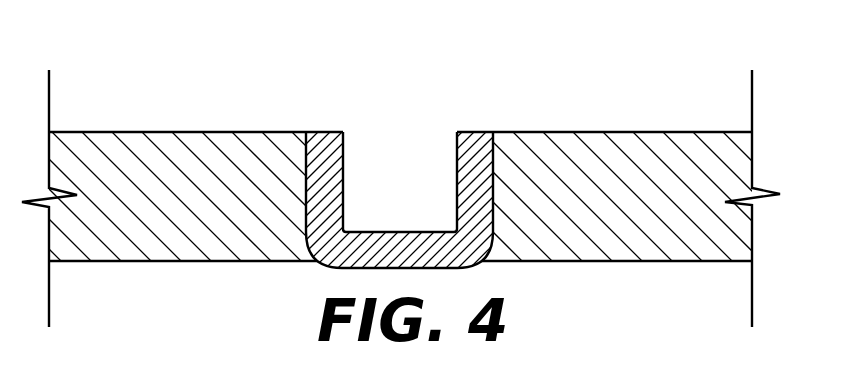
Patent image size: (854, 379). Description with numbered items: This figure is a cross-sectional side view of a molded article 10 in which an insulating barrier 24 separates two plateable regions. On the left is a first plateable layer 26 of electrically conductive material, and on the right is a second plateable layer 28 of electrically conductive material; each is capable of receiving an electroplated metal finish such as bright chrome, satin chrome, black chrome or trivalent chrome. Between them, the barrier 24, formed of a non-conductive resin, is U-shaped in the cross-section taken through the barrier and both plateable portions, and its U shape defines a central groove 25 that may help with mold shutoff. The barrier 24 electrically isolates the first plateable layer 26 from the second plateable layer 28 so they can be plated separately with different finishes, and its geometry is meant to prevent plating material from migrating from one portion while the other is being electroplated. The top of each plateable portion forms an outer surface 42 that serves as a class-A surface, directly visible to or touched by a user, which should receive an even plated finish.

The molded article 10 is at (427, 179).
The barrier 24 is at (325, 165).
The central groove 25 is at (389, 188).
The first plateable layer 26 is at (115, 185).
The second plateable layer 28 is at (688, 185).
The outer surface 42 is at (201, 132).